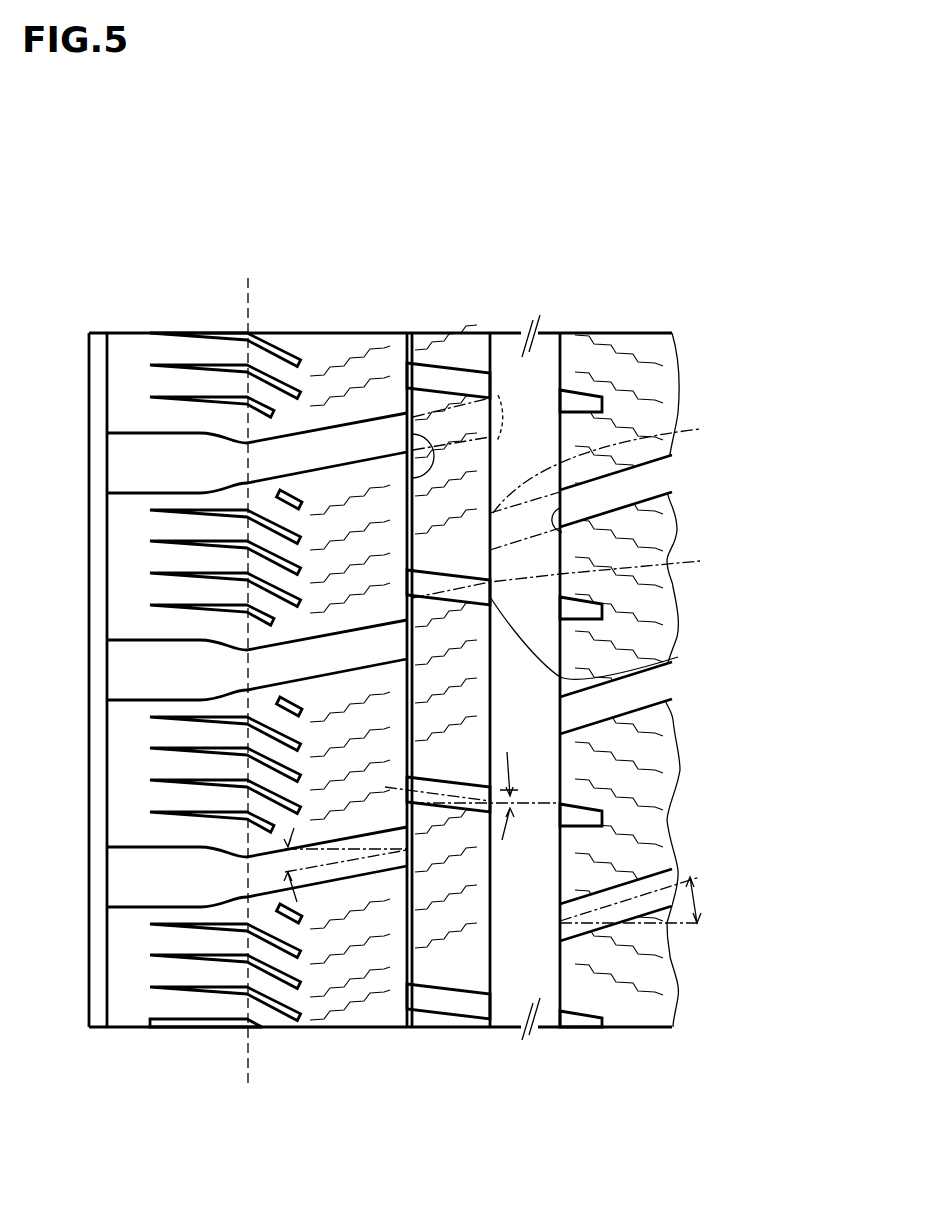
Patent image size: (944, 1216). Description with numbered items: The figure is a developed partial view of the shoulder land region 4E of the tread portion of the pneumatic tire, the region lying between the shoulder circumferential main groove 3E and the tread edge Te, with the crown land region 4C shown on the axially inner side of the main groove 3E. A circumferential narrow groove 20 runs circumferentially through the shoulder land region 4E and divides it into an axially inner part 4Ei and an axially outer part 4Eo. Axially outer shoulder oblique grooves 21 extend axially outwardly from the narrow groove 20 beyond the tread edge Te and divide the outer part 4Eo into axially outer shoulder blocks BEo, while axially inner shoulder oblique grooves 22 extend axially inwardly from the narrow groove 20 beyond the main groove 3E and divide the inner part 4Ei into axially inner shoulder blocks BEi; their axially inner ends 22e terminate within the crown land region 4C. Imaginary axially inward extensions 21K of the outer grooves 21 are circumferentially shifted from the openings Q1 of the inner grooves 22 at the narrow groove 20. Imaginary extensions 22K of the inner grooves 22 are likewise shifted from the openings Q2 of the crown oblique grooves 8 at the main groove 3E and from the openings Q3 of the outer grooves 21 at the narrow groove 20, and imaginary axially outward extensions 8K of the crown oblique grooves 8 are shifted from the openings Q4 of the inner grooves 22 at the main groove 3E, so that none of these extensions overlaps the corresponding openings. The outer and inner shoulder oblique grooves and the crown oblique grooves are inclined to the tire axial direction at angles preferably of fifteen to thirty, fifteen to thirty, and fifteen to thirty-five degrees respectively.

The tread edge Te is at (247, 294).
The axially outer shoulder oblique groove 21 is at (306, 450).
The opening of axially inner shoulder oblique groove at circumferential narrow groov Q1 is at (405, 375).
The circumferential narrow groove 20 is at (410, 333).
The imaginary axially inward extension of axially outer shoulder oblique groove 21K is at (457, 403).
The axially inner shoulder oblique groove 22 is at (472, 387).
The shoulder circumferential main groove 3E is at (543, 367).
The axially inner end of axially inner shoulder oblique groove 22e is at (602, 403).
The imaginary axially outward extension of crown oblique groove 8K is at (700, 429).
The crown oblique groove 8 is at (640, 465).
The opening of crown oblique groove at shoulder circumferential main groove Q2 is at (562, 532).
The imaginary extension of axially inner shoulder oblique groove 22K is at (700, 561).
The opening of axially inner shoulder oblique groove at shoulder circumferential mai Q4 is at (677, 657).
The opening of axially outer shoulder oblique groove at circumferential narrow groov Q3 is at (412, 478).
The axially outer shoulder block BEo is at (375, 768).
The axially inner shoulder block BEi is at (470, 733).
The axially outer part of shoulder land region 4Eo is at (405, 1040).
The axially inner part of shoulder land region 4Ei is at (492, 1040).
The shoulder land region 4E is at (485, 1105).
The crown land region 4C is at (623, 1066).